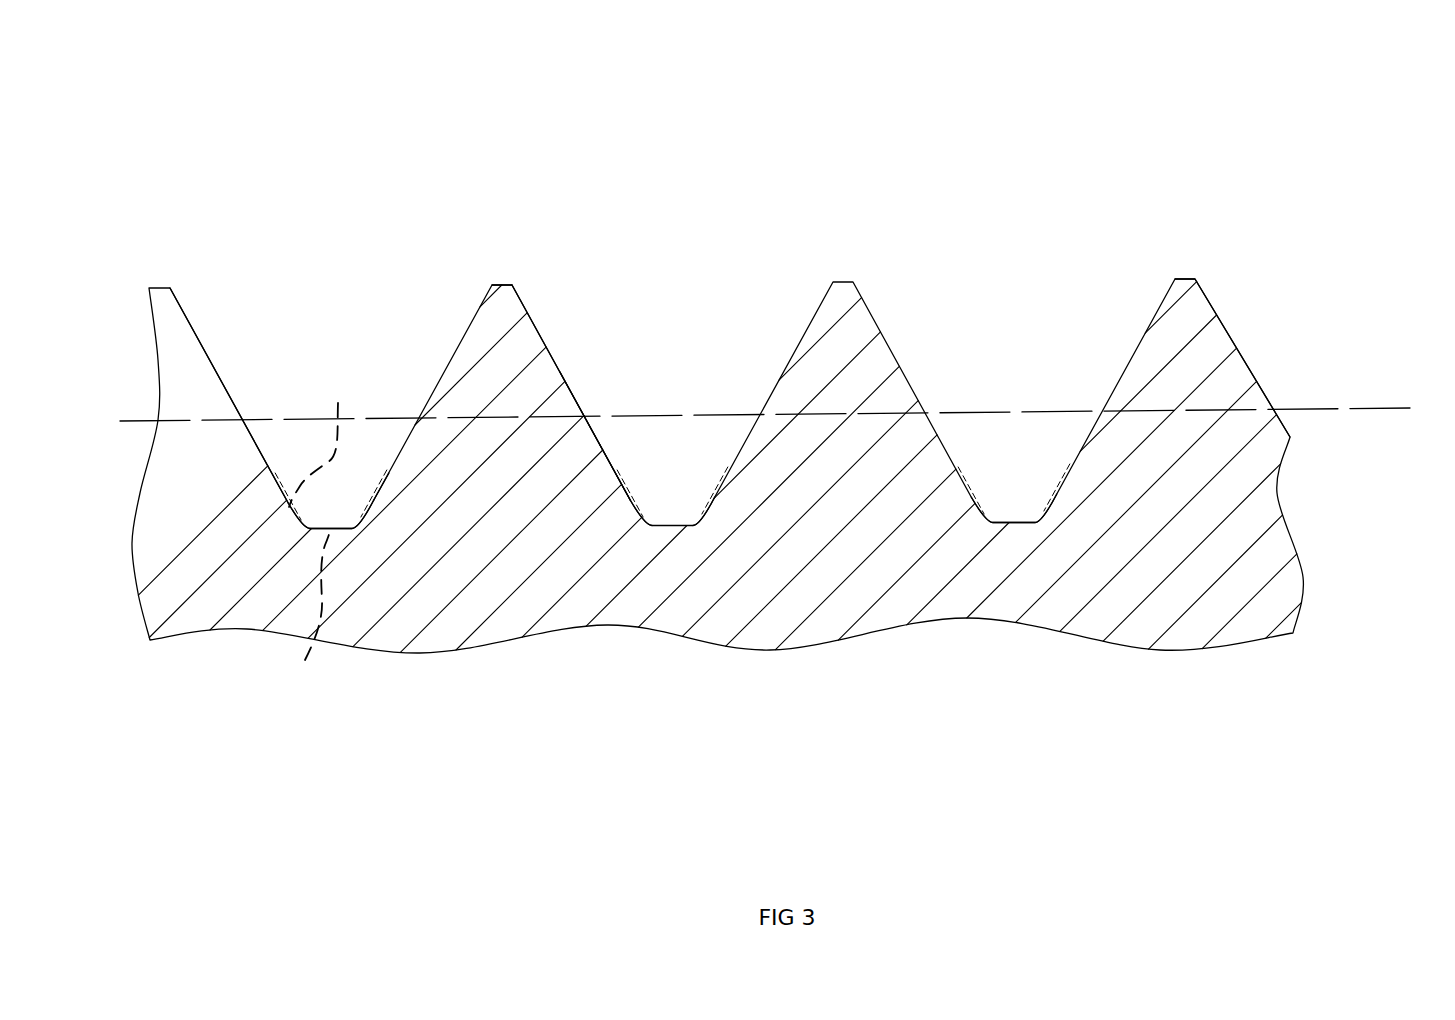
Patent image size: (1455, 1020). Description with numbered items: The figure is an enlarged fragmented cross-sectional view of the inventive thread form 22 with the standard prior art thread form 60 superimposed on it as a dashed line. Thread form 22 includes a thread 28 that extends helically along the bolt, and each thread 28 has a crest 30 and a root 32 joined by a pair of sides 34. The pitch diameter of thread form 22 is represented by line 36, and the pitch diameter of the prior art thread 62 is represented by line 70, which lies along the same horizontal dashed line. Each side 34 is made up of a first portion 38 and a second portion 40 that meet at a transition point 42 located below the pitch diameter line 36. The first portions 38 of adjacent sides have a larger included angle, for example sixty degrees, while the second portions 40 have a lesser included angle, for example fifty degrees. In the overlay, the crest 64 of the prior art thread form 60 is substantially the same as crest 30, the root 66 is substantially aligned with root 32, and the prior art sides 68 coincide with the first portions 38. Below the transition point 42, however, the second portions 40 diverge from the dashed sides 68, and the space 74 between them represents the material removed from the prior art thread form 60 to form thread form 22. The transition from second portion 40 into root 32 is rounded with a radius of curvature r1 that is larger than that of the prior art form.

The thread form 22 is at (218, 140).
The prior art thread form 60 is at (340, 120).
The crest 30 is at (545, 244).
The crest 64 is at (495, 284).
The side 34 is at (537, 323).
The side 68 is at (472, 389).
The first portion 38 is at (578, 397).
The transition point 42 is at (607, 437).
The thread 28 is at (1253, 357).
The thread 62 is at (1208, 335).
The pitch diameter line 36 is at (783, 377).
The pitch diameter line 70 is at (1345, 411).
The second portion 40 is at (388, 477).
The root 32 is at (363, 525).
The space 74 is at (288, 513).
The root 66 is at (303, 610).
The radius of curvature r1 is at (1045, 500).